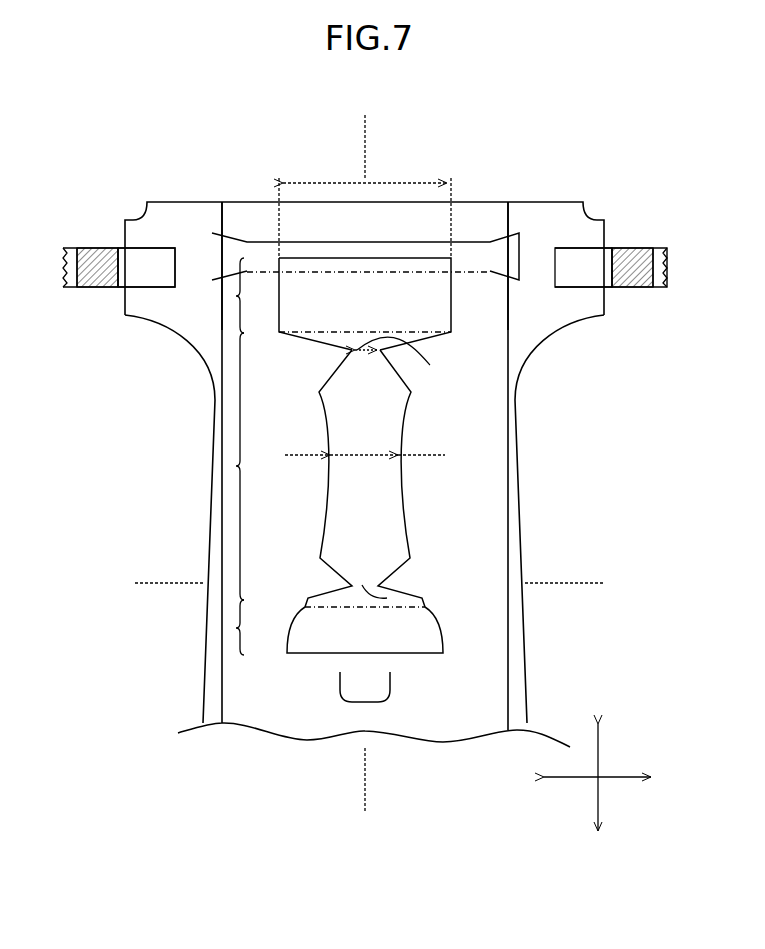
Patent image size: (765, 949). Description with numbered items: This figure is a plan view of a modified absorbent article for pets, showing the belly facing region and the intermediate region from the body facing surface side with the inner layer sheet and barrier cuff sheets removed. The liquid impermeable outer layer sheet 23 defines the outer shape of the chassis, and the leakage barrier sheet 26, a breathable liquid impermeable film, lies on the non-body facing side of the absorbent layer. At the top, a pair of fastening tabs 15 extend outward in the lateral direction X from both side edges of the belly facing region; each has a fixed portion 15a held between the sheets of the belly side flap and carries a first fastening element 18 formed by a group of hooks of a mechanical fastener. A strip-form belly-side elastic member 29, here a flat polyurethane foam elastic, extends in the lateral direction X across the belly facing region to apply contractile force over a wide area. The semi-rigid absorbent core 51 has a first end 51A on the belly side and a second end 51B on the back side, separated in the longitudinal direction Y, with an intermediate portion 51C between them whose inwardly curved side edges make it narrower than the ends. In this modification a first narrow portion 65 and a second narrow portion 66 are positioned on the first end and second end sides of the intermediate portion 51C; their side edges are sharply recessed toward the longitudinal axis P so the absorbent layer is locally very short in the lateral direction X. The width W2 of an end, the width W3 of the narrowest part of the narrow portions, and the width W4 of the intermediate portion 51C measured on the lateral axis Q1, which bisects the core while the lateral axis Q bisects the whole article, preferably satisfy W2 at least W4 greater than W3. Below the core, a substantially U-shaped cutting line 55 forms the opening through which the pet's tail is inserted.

The fastening tab 15 is at (94, 246).
The fixed portion 15a is at (150, 262).
The first fastening element 18 is at (98, 275).
The outer layer sheet 23 is at (520, 210).
The leakage barrier sheet 26 is at (478, 215).
The belly-side elastic member 29 is at (258, 242).
The absorbent core 51 is at (455, 298).
The first end 51A is at (236, 296).
The second end 51B is at (236, 628).
The intermediate portion 51C is at (236, 466).
The cutting line 55 is at (372, 702).
The first narrow portion 65 is at (407, 358).
The second narrow portion 66 is at (388, 596).
The length of the first end and/or second end in the lateral direction W2 is at (388, 183).
The length of the narrowest portion of the narrow portions in the lateral direction W3 is at (365, 352).
The length of the intermediate portion on the lateral axis Q1 W4 is at (365, 457).
The lateral axis Q is at (152, 583).
The lateral axis Q1 is at (365, 455).
The longitudinal axis P is at (367, 122).
The lateral direction X is at (620, 778).
The longitudinal direction Y is at (604, 753).